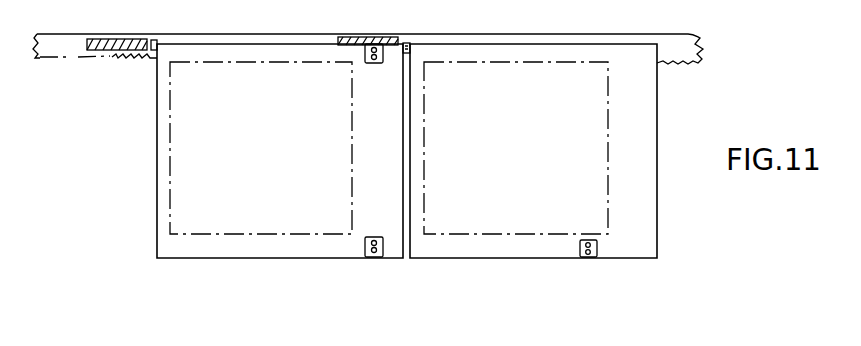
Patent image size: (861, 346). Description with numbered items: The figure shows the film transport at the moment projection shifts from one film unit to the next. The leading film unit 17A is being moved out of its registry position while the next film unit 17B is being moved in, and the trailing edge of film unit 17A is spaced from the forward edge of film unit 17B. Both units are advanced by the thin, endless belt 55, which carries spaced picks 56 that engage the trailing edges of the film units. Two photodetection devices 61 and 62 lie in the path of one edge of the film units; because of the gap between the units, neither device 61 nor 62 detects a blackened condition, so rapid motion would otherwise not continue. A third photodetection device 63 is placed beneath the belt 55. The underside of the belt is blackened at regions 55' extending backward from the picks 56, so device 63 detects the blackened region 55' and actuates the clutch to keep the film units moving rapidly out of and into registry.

The endless belt 55 is at (368, 34).
The blackened belt region 55' is at (242, 25).
The pick 56 is at (155, 42).
The leading film unit 17A is at (657, 126).
The next film unit 17B is at (157, 117).
The photodetection device 61 is at (580, 248).
The photodetection device 62 is at (370, 259).
The photodetection device 63 is at (371, 44).